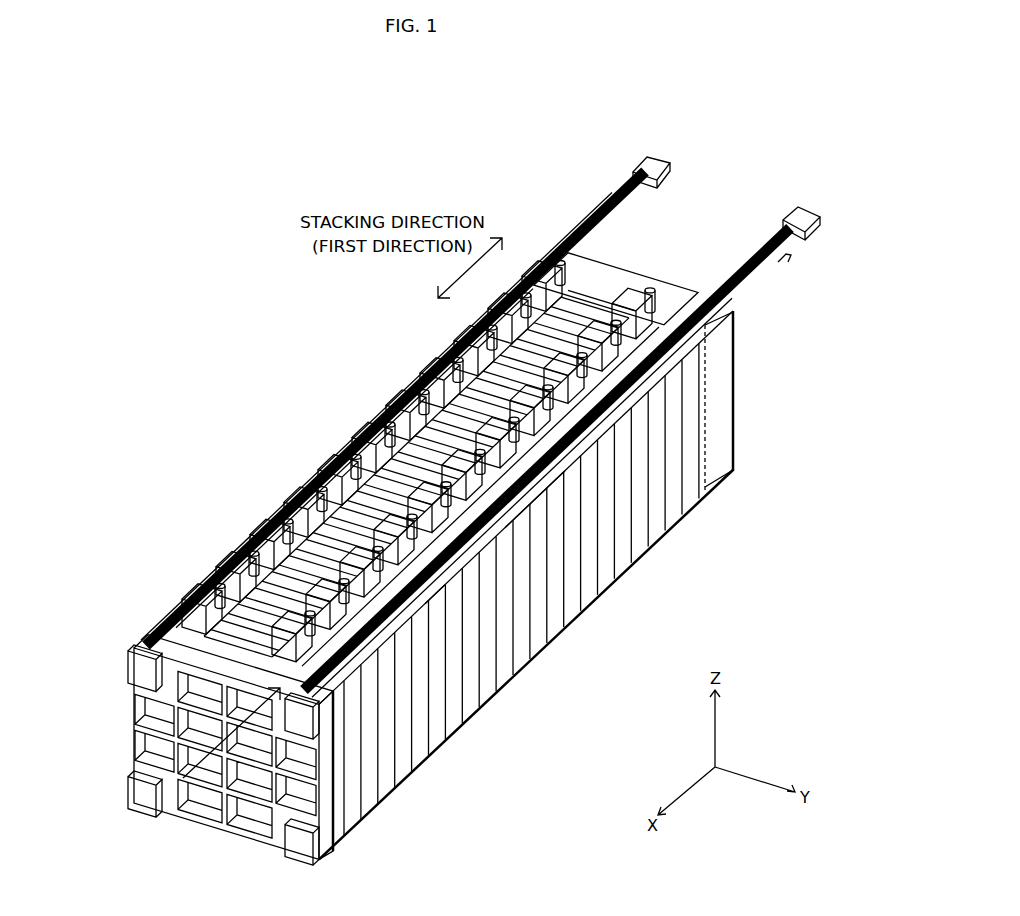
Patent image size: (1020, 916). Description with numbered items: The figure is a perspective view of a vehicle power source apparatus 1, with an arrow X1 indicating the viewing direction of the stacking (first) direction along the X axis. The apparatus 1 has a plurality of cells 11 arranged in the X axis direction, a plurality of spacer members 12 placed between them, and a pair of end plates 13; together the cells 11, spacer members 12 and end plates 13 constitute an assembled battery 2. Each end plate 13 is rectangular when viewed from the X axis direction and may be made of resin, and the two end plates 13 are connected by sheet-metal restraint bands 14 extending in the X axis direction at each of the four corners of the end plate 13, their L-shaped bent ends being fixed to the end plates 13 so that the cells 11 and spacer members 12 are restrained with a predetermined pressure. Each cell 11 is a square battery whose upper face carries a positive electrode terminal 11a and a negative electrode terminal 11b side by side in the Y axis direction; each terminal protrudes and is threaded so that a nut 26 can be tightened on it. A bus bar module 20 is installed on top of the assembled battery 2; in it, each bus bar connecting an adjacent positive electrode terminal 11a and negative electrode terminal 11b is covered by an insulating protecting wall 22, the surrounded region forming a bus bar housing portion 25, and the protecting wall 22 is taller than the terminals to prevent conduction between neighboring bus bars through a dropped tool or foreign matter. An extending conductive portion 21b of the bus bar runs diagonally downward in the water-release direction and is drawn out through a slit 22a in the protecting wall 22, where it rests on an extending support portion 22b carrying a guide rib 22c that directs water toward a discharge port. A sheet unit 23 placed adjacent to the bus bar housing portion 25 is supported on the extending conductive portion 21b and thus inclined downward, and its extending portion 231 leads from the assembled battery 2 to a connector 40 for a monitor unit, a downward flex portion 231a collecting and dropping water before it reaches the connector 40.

The vehicle power source apparatus 1 is at (462, 491).
The assembled battery 2 is at (470, 488).
The cell 11 is at (395, 574).
The positive electrode terminal 11a is at (240, 537).
The negative electrode terminal 11b is at (205, 580).
The spacer member 12 is at (293, 610).
The end plate 13 is at (372, 548).
The restraint band 14 is at (300, 723).
The bus bar module 20 is at (512, 407).
The extending conductive portion 21b is at (535, 500).
The protecting wall 22 is at (532, 518).
The slit 22a is at (437, 582).
The extending support portion 22b is at (555, 476).
The guide rib 22c is at (515, 518).
The sheet unit 23 is at (706, 493).
The bus bar housing portion 25 is at (287, 503).
The nut 26 is at (320, 468).
The connector 40 is at (800, 218).
The extending portion 231 is at (597, 475).
The flex portion 231a is at (787, 253).
The arrow X1 is at (231, 733).